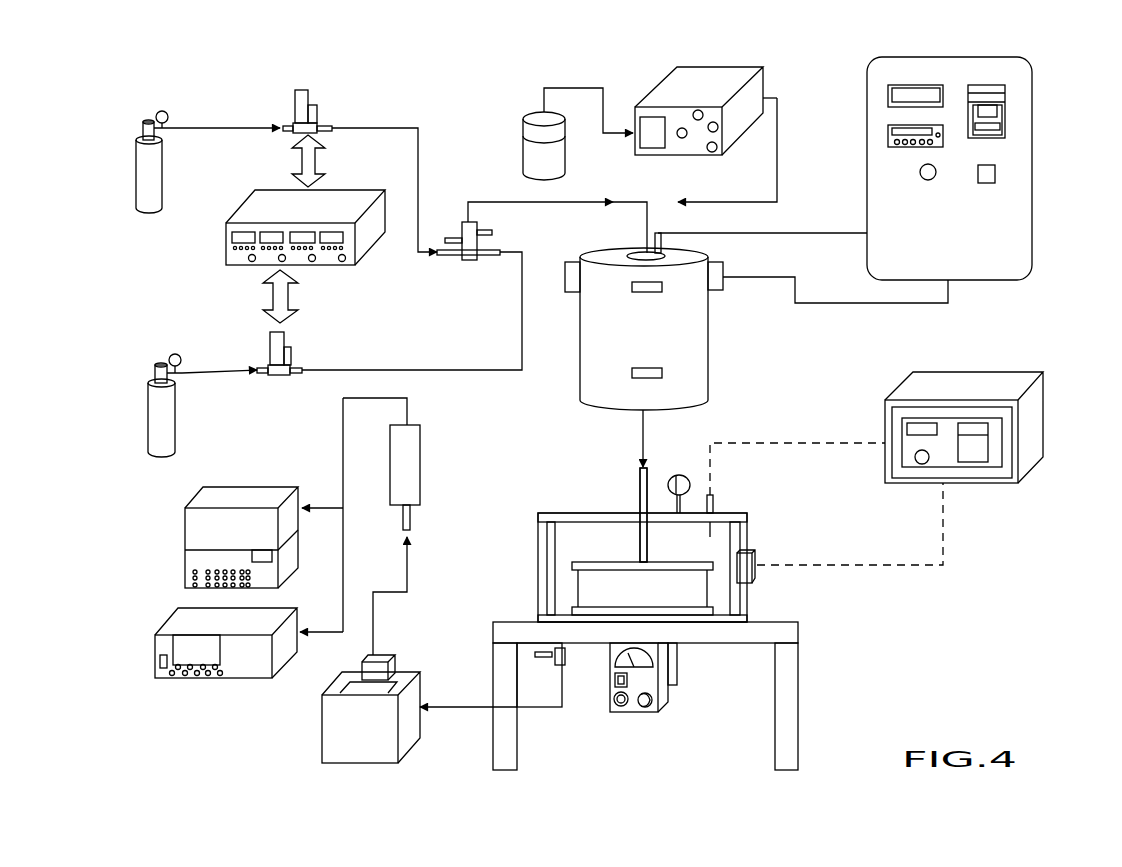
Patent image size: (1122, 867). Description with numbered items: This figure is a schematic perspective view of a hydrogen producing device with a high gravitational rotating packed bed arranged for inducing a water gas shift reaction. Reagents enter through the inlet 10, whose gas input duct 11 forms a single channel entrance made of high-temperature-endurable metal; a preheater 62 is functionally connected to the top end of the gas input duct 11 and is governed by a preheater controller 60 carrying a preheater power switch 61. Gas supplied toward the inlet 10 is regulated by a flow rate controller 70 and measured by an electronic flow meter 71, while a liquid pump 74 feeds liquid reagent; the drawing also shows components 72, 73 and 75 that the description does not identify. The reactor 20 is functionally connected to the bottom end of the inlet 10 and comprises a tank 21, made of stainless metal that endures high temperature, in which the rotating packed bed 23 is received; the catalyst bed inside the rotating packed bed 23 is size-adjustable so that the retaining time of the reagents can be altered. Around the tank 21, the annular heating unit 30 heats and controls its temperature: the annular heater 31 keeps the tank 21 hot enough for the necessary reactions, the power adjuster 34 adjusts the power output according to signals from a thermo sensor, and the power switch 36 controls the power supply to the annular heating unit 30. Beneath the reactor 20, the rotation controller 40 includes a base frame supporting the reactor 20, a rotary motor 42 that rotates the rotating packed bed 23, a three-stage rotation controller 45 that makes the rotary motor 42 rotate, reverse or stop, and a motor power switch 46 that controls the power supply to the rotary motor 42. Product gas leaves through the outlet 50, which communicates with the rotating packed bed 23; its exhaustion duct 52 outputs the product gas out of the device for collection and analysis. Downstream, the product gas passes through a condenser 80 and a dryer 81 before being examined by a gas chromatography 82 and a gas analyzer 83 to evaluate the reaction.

The inlet 10 is at (617, 462).
The gas input duct 11 is at (640, 495).
The reactor 20 is at (510, 585).
The tank 21 is at (543, 543).
The rotating packed bed 23 is at (602, 585).
The annular heating unit 30 is at (964, 485).
The annular heater 31 is at (747, 578).
The power adjuster 34 is at (983, 457).
The power switch 36 is at (922, 458).
The rotation controller 40 is at (683, 702).
The rotary motor 42 is at (654, 707).
The three-stage rotation controller 45 is at (645, 703).
The motor power switch 46 is at (615, 678).
The outlet 50 is at (532, 713).
The exhaustion duct 52 is at (465, 708).
The preheater controller 60 is at (875, 180).
The preheater power switch 61 is at (987, 173).
The preheater 62 is at (693, 353).
The flow rate controller 70 is at (257, 203).
The electronic flow meter 71 is at (307, 92).
The gas cylinder 72 is at (147, 173).
The gas cylinder 73 is at (158, 422).
The liquid pump 74 is at (708, 80).
The liquid reservoir 75 is at (530, 153).
The condenser 80 is at (328, 727).
The dryer 81 is at (421, 460).
The gas chromatography 82 is at (192, 532).
The gas analyzer 83 is at (157, 662).